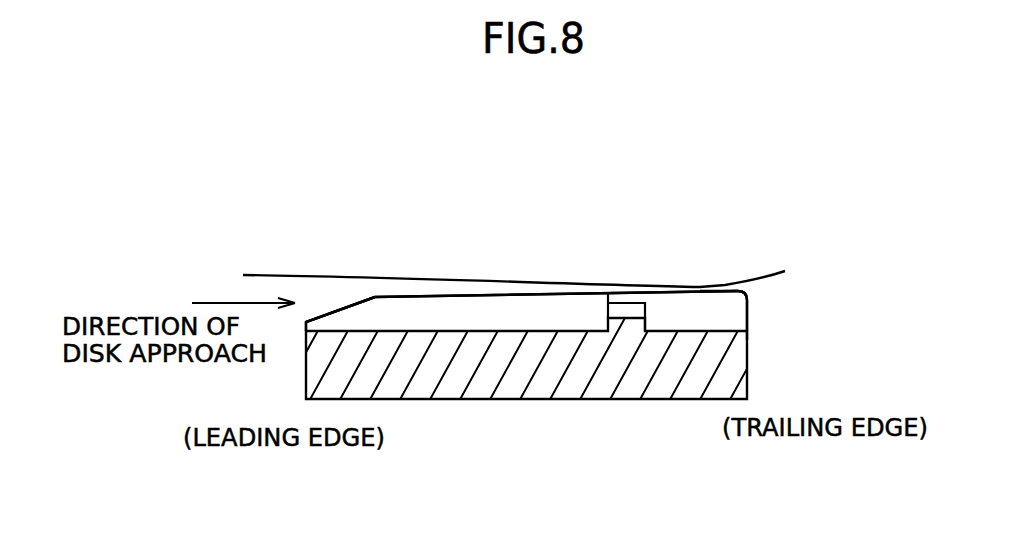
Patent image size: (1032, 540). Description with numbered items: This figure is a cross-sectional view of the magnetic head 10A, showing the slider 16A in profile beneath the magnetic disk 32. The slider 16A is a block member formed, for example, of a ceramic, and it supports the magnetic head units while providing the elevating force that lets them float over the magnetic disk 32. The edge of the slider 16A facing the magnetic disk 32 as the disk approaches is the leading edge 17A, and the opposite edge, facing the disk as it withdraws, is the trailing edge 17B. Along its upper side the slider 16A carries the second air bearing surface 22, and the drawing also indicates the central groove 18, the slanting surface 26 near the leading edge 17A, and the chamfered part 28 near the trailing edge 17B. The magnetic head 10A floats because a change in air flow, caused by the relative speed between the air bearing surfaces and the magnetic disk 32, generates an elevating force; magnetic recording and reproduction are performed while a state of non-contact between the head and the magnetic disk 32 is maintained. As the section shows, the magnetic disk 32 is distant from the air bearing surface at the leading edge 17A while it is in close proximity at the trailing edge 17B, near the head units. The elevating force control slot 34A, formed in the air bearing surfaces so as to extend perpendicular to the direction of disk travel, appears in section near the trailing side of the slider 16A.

The magnetic head 10A is at (517, 305).
The slider 16A is at (676, 406).
The leading edge 17A is at (306, 322).
The trailing edge 17B is at (738, 291).
The central groove 18 is at (493, 310).
The second air bearing surface 22 is at (430, 297).
The slanting surface 26 is at (334, 309).
The chamfered part 28 is at (747, 291).
The magnetic disk 32 is at (773, 272).
The elevating force control slot 34A is at (622, 303).